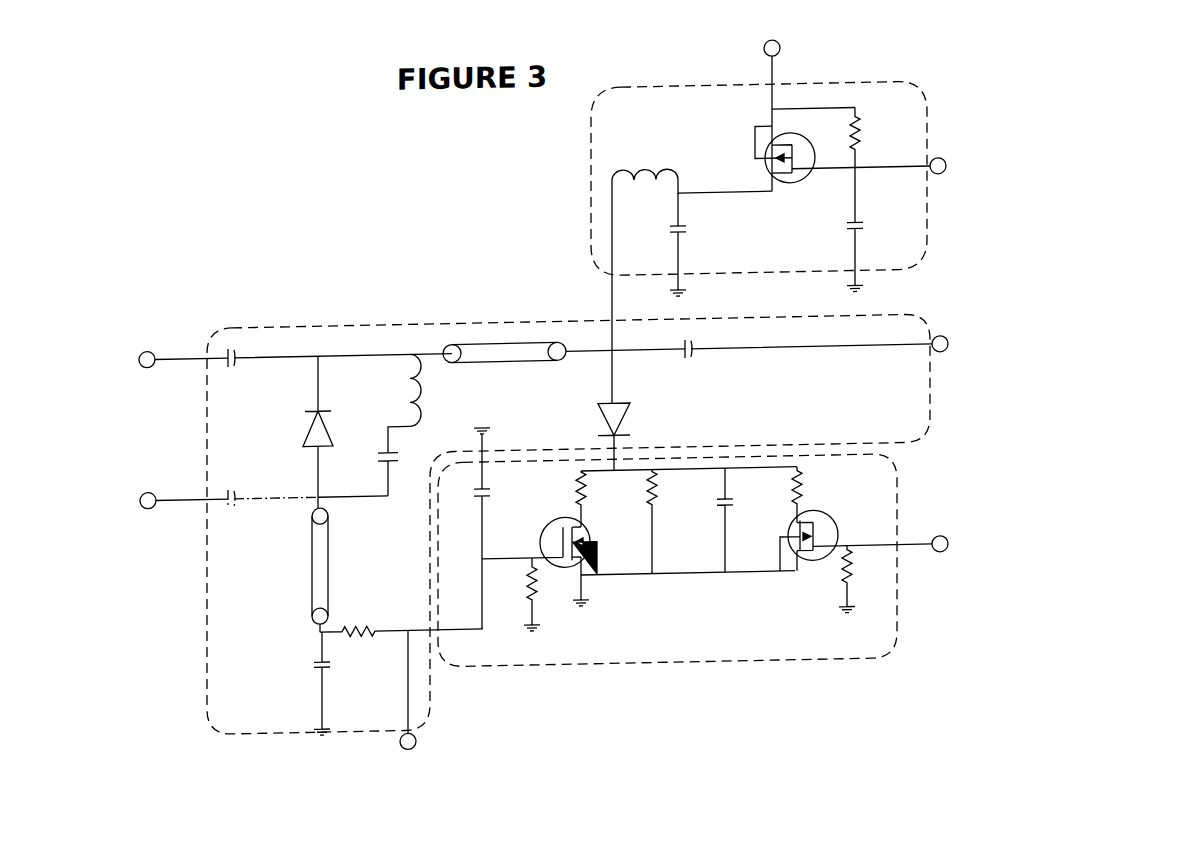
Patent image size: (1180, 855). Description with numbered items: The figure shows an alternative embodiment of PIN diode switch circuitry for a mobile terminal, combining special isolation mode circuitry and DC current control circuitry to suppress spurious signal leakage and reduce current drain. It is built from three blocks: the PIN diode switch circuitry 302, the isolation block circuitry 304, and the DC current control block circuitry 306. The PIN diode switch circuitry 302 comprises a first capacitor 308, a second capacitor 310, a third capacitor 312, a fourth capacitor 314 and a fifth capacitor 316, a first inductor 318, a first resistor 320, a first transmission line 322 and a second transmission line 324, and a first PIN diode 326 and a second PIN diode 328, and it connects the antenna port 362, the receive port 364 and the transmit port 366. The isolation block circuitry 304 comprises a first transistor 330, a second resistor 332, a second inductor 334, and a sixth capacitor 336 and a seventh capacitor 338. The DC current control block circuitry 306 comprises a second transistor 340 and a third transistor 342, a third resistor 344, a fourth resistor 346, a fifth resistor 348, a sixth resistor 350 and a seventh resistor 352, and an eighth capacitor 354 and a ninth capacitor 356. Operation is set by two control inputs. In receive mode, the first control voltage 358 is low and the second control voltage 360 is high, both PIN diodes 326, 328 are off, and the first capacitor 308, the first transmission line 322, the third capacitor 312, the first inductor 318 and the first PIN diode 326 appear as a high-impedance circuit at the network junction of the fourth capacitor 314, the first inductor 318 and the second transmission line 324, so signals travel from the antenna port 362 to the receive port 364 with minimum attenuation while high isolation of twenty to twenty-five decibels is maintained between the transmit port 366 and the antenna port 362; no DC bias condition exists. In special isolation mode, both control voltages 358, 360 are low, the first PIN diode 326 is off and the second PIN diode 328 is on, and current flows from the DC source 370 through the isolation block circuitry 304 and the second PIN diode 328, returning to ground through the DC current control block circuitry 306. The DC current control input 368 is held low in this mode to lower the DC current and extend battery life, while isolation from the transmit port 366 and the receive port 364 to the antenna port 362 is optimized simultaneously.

The PIN diode switch circuitry 302 is at (292, 736).
The isolation block circuitry 304 is at (591, 226).
The DC current control block circuitry 306 is at (815, 665).
The capacitor C1 308 is at (318, 664).
The capacitor C2 310 is at (237, 497).
The capacitor C3 312 is at (385, 458).
The capacitor C4 314 is at (236, 363).
The capacitor C5 316 is at (693, 358).
The inductor L1 318 is at (420, 398).
The resistor R1 320 is at (370, 628).
The transmission line TRL-1 322 is at (330, 552).
The transmission line TRL-2 324 is at (490, 362).
The PIN diode D1 326 is at (322, 407).
The PIN diode D2 328 is at (616, 410).
The transistor Q1 330 is at (797, 180).
The resistor R2 332 is at (858, 128).
The inductor L2 334 is at (650, 170).
The capacitor C6 336 is at (684, 238).
The capacitor C7 338 is at (860, 238).
The transistor Q2 340 is at (544, 536).
The transistor Q3 342 is at (817, 562).
The resistor R3 344 is at (535, 602).
The resistor R4 346 is at (584, 510).
The resistor R5 348 is at (658, 510).
The resistor R6 350 is at (806, 490).
The resistor R7 352 is at (852, 574).
The capacitor C8 354 is at (729, 513).
The capacitor C9 356 is at (480, 498).
The Vcontrol1 358 is at (413, 745).
The Vcontrol2 360 is at (943, 180).
The ANT port 362 is at (148, 360).
The RX port 364 is at (945, 358).
The TX port 366 is at (150, 500).
The DC current control input 368 is at (937, 559).
The DC source 370 is at (779, 57).